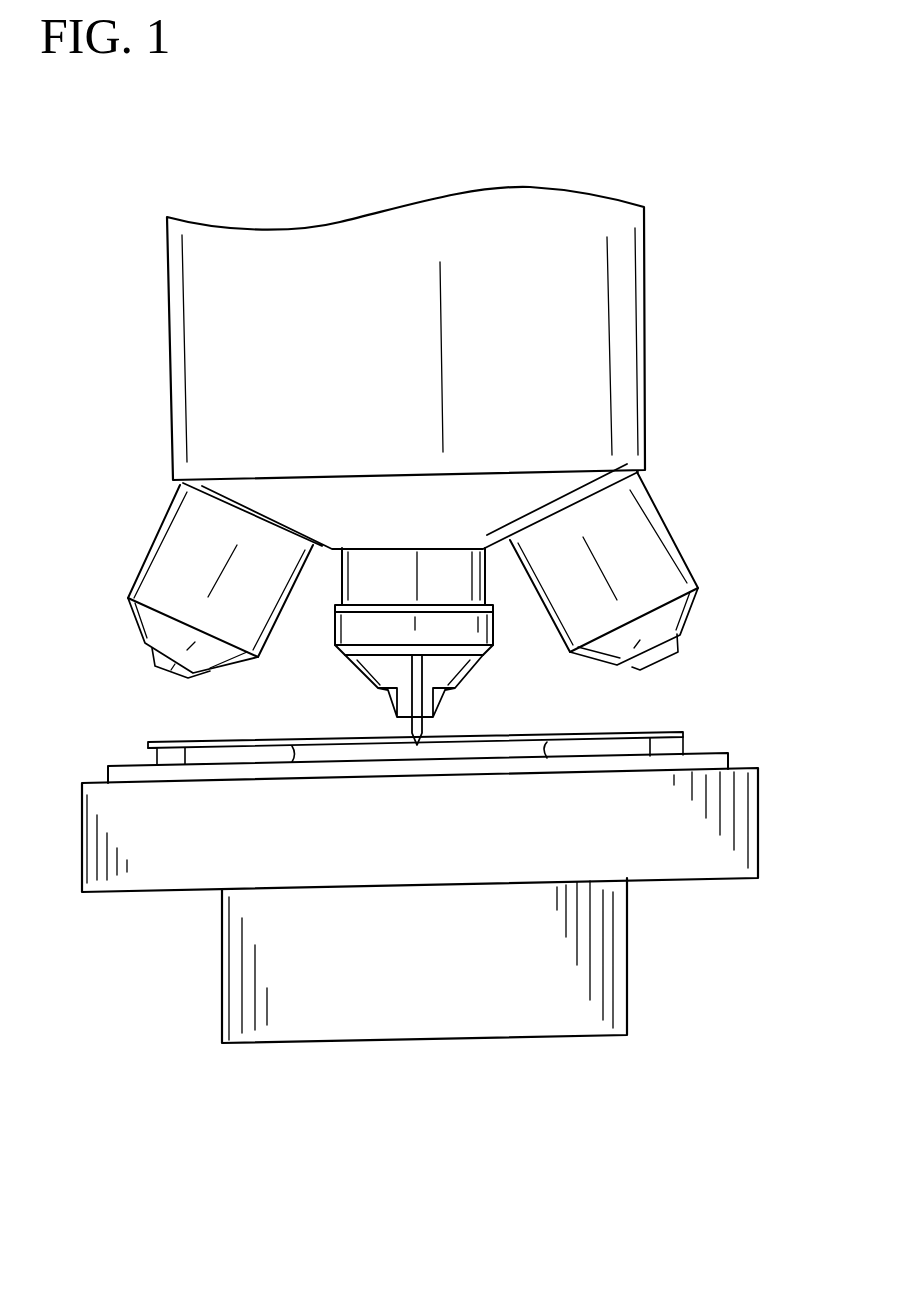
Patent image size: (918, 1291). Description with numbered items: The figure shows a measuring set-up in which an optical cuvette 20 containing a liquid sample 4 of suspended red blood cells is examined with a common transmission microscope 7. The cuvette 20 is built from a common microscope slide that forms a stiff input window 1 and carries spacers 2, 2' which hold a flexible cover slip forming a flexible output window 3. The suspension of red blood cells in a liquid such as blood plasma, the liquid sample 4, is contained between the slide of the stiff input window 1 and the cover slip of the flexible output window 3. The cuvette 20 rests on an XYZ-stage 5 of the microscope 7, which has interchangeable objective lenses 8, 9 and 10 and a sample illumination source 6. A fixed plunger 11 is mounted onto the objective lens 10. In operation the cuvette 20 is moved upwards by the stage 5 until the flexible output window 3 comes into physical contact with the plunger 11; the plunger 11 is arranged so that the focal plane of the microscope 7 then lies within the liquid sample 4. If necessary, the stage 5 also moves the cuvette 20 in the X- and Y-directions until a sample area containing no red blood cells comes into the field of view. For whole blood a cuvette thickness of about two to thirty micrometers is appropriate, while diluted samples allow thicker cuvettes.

The stiff input window 1 is at (730, 757).
The spacer 2 is at (93, 736).
The spacer 2' is at (724, 732).
The flexible output window 3 is at (588, 745).
The liquid sample 4 is at (478, 748).
The XYZ-stage 5 is at (712, 858).
The sample illumination source 6 is at (545, 1015).
The transmission microscope 7 is at (187, 338).
The objective lens 8 is at (637, 540).
The objective lens 9 is at (182, 548).
The objective lens 10 is at (350, 628).
The fixed plunger 11 is at (413, 731).
The optical cuvette 20 is at (690, 692).